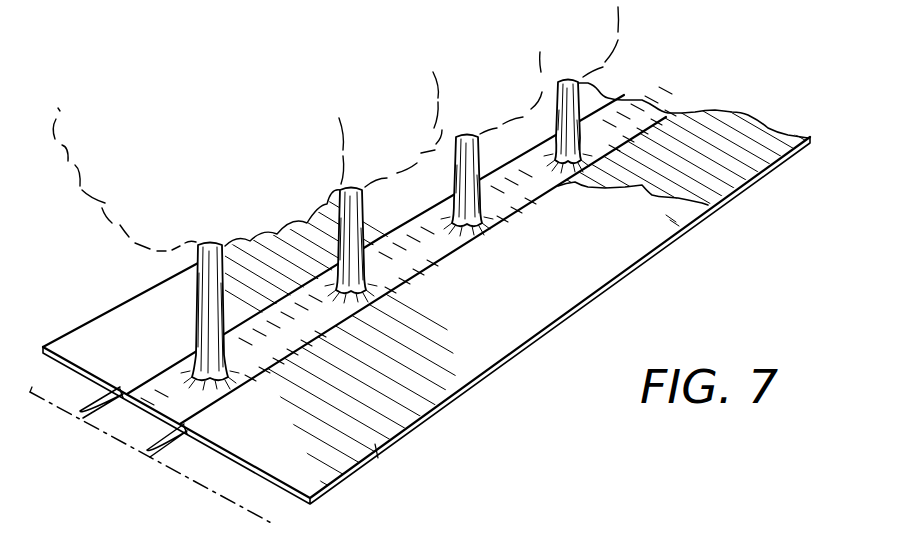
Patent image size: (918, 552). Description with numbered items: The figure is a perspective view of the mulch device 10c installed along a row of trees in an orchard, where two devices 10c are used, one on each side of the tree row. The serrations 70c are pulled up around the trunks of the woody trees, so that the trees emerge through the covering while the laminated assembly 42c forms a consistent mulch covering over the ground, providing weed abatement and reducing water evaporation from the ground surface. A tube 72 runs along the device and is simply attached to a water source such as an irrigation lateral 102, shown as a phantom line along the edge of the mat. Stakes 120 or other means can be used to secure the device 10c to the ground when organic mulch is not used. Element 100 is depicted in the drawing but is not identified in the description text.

The device 10c is at (429, 276).
The serrations 70c is at (413, 237).
The laminated assembly 42c is at (627, 243).
The upper layer of mat 100 is at (723, 183).
The stakes 120 is at (377, 450).
The tube 72 is at (150, 451).
The irrigation lateral 102 is at (245, 516).